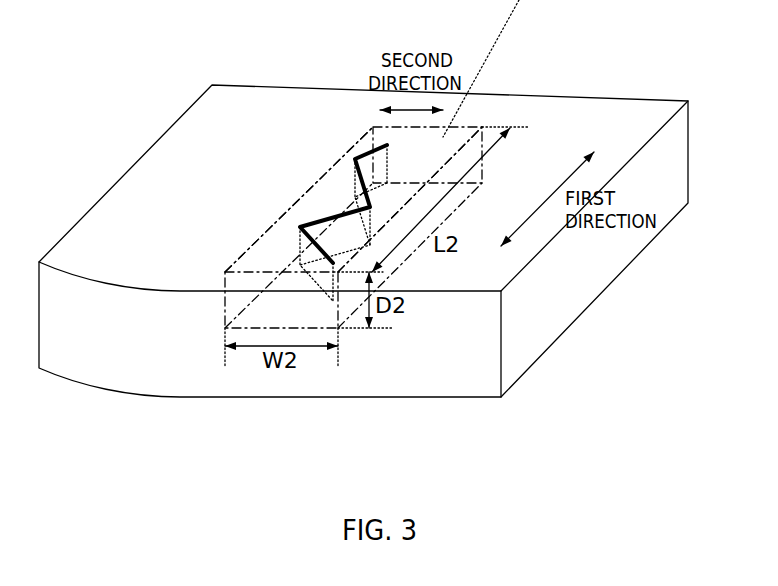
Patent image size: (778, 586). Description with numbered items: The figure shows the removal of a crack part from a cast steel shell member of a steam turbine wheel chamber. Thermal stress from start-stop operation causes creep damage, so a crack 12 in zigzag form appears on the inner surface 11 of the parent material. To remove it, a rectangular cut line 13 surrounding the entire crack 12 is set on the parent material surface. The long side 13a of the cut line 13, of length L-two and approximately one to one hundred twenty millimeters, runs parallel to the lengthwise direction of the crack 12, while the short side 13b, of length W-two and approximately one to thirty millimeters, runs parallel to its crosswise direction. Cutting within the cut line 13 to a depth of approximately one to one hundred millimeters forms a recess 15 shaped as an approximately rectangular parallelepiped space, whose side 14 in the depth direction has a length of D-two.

The inner surface 11 is at (630, 113).
The crack 12 is at (358, 156).
The cut line 13 is at (338, 158).
The long side of the cut line 13a is at (290, 208).
The short side of the cut line 13b is at (380, 127).
The side in the depth direction 14 is at (339, 302).
The recess 15 is at (460, 138).